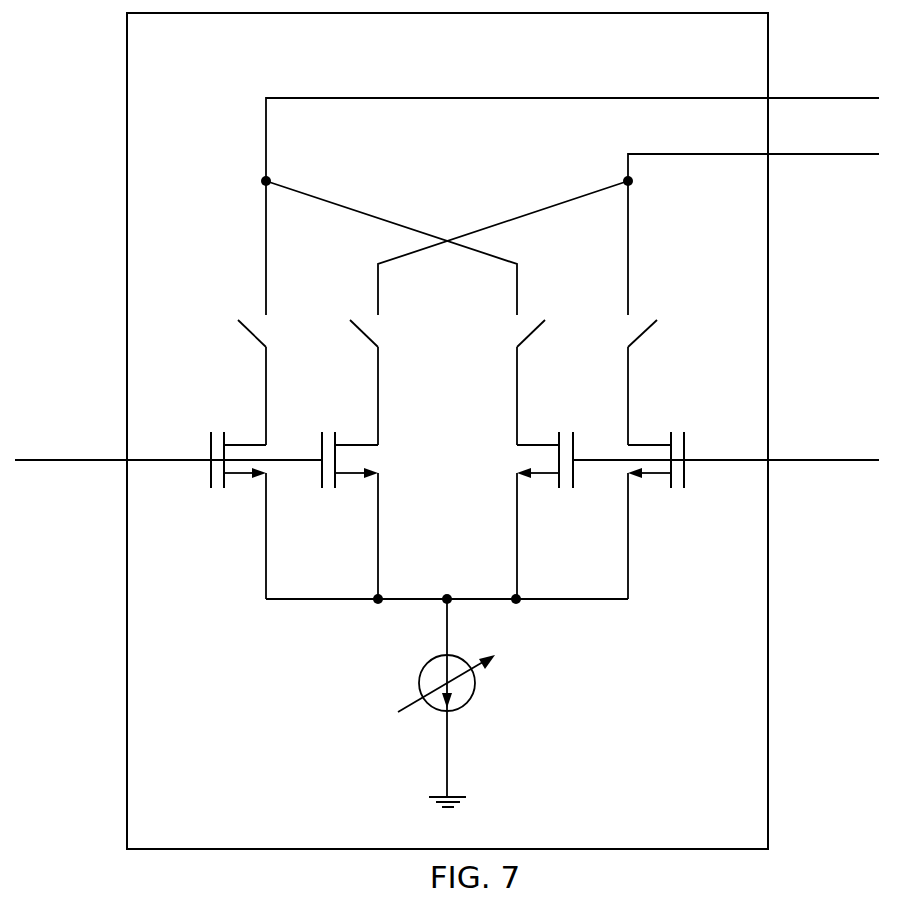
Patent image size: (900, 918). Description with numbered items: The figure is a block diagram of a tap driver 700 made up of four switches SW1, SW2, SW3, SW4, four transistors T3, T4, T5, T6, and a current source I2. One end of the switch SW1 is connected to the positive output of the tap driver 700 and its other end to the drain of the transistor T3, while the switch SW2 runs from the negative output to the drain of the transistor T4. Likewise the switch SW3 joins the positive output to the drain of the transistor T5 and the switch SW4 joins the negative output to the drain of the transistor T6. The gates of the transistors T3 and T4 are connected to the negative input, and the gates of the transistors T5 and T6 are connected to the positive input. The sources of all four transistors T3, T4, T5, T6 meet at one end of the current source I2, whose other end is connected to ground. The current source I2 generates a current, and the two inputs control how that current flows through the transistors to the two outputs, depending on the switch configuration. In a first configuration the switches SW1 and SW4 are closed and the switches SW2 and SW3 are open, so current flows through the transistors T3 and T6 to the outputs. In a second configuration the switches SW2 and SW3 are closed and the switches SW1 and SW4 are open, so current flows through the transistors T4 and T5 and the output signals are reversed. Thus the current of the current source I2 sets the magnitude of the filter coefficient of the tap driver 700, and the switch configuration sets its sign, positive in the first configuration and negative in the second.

The tap driver 700 is at (430, 46).
The switch SW1 is at (276, 382).
The switch SW2 is at (389, 382).
The switch SW3 is at (505, 382).
The switch SW4 is at (617, 382).
The transistor T3 is at (235, 515).
The transistor T4 is at (347, 515).
The transistor T5 is at (547, 515).
The transistor T6 is at (659, 515).
The current source I2 is at (431, 698).